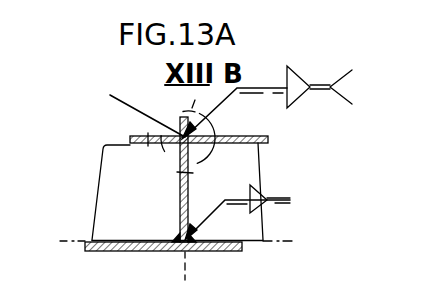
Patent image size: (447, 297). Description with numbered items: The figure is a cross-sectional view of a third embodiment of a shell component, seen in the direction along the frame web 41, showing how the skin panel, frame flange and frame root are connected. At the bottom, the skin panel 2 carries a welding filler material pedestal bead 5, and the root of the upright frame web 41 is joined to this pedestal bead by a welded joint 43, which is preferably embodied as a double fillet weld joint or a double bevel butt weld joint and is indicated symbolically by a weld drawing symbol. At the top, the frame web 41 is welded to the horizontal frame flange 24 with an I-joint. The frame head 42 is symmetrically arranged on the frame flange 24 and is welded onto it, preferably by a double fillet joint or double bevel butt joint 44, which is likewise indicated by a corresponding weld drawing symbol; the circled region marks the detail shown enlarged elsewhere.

The skin panel 2 is at (106, 253).
The welding filler material pedestal bead 5 is at (182, 251).
The frame flange 24 is at (163, 143).
The frame web 41 is at (180, 205).
The frame head 42 is at (154, 114).
The welded joint 43 is at (260, 212).
The double fillet joint or double bevel butt joint 44 is at (267, 102).